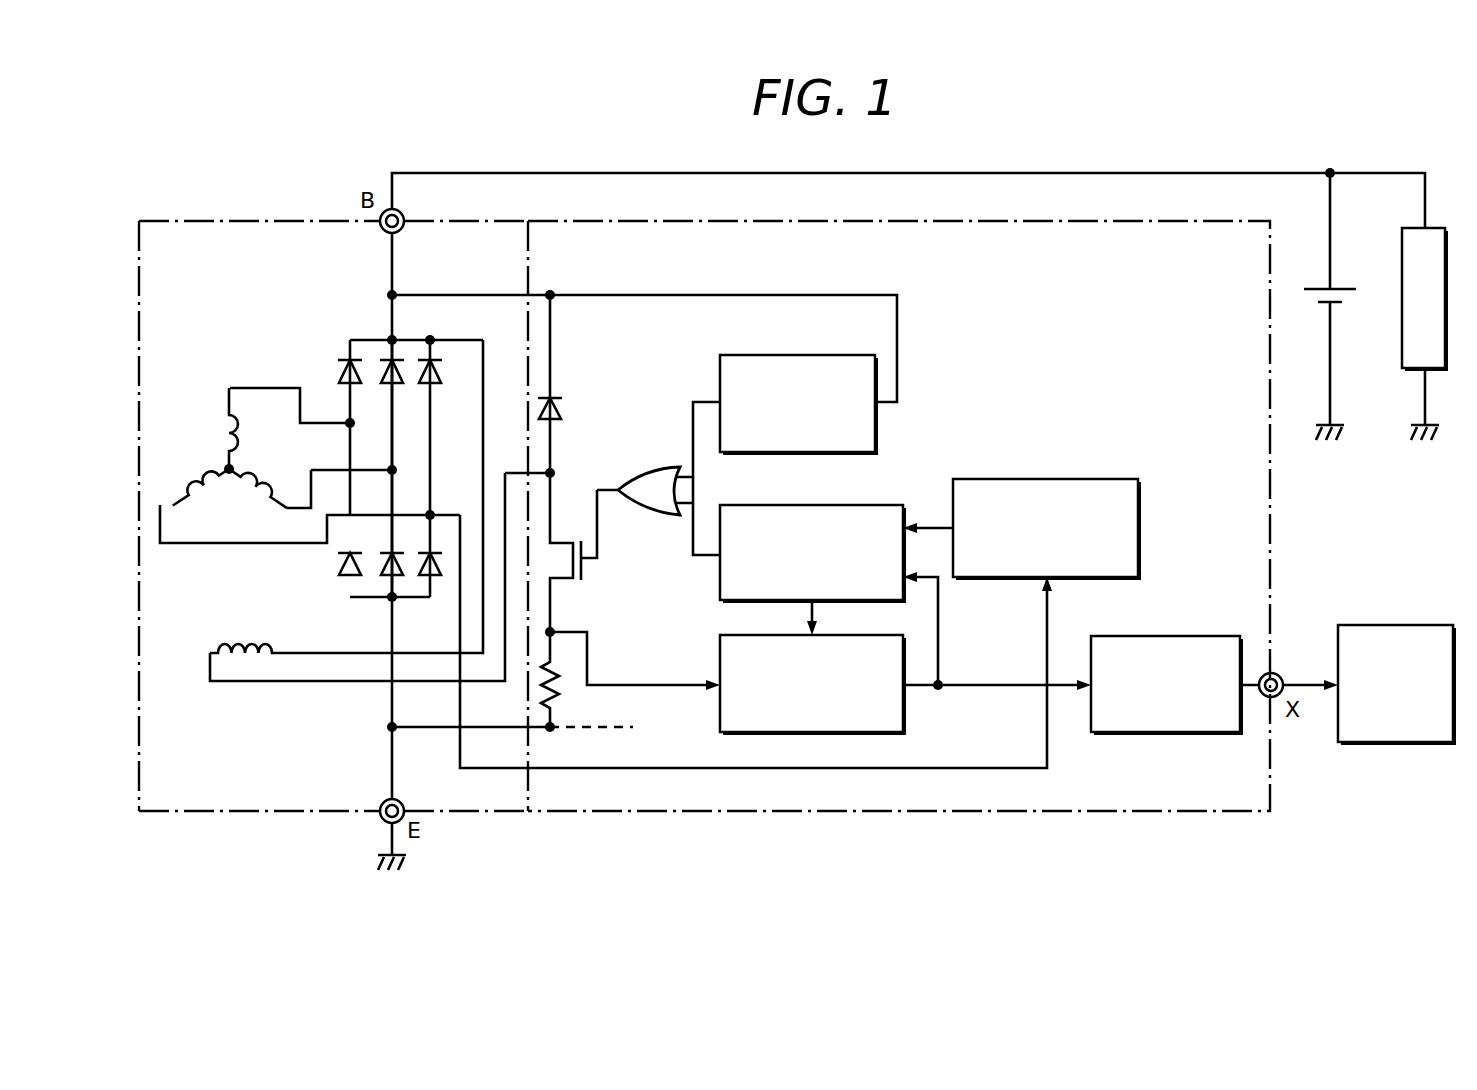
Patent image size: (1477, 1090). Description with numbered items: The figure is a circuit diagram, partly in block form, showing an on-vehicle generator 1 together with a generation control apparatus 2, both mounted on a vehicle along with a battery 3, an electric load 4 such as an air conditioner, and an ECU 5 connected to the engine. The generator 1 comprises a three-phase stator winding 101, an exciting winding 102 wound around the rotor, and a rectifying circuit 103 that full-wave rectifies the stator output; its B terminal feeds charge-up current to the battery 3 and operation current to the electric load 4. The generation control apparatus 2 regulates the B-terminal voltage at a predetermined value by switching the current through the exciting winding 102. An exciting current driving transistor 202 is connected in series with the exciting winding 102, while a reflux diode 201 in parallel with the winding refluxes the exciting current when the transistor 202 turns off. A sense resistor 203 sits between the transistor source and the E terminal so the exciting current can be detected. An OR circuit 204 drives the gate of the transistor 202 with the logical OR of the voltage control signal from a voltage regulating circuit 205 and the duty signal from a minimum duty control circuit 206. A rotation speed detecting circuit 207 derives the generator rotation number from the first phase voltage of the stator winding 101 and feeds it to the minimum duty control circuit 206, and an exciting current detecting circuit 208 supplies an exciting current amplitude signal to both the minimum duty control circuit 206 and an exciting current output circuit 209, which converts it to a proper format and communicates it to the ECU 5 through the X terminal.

The generator 1 is at (168, 221).
The generation control apparatus 2 is at (1197, 221).
The battery 3 is at (1342, 289).
The electric load 4 is at (1432, 228).
The ECU 5 is at (1395, 625).
The three-phase stator winding 101 is at (218, 450).
The exciting winding 102 is at (240, 640).
The rectifying circuit 103 is at (366, 340).
The reflux diode 201 is at (560, 398).
The exciting current driving transistor 202 is at (565, 582).
The sense resistor 203 is at (560, 686).
The OR circuit 204 is at (660, 467).
The voltage regulating circuit 205 is at (720, 375).
The minimum duty control circuit 206 is at (885, 505).
The rotation speed detecting circuit 207 is at (1055, 479).
The exciting current detecting circuit 208 is at (903, 712).
The exciting current output circuit 209 is at (1170, 636).